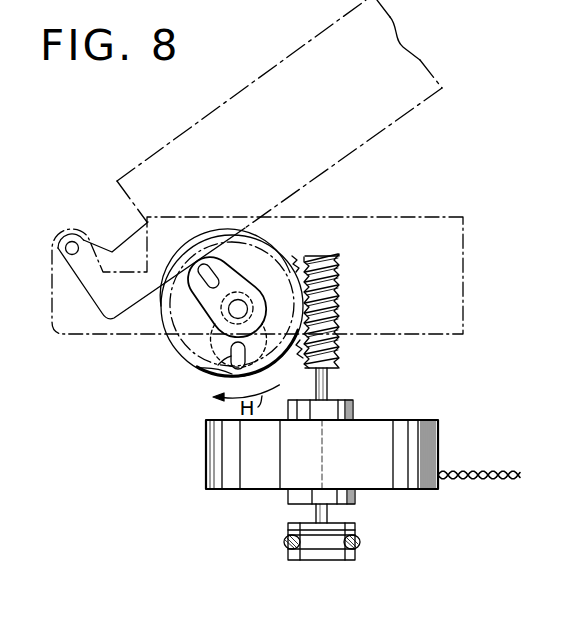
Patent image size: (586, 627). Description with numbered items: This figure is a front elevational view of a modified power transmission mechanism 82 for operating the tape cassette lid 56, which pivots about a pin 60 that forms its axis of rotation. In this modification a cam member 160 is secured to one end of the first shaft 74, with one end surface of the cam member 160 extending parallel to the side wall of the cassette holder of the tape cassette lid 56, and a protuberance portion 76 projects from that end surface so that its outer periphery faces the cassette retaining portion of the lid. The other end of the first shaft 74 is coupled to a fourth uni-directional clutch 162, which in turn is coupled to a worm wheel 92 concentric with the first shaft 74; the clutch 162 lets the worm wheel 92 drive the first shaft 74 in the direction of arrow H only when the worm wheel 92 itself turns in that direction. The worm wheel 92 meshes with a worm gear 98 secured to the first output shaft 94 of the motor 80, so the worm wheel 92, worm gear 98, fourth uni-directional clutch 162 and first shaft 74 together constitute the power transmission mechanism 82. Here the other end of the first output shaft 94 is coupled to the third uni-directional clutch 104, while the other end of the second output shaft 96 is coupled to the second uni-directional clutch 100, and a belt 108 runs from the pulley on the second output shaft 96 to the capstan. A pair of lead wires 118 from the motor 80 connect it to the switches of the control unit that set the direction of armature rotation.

The tape cassette lid 56 is at (212, 135).
The pin 60 is at (72, 240).
The first shaft 74 is at (241, 309).
The protuberance portion 76 is at (224, 372).
The motor 80 is at (438, 426).
The power transmission mechanism 82 is at (312, 240).
The worm wheel 92 is at (185, 340).
The first output shaft 94 is at (329, 383).
The second output shaft 96 is at (315, 518).
The worm gear 98 is at (323, 257).
The second uni-directional clutch 100 is at (357, 495).
The third uni-directional clutch 104 is at (355, 407).
The belt 108 is at (362, 542).
The lead wires 118 is at (494, 465).
The cam member 160 is at (228, 270).
The fourth uni-directional clutch 162 is at (260, 337).